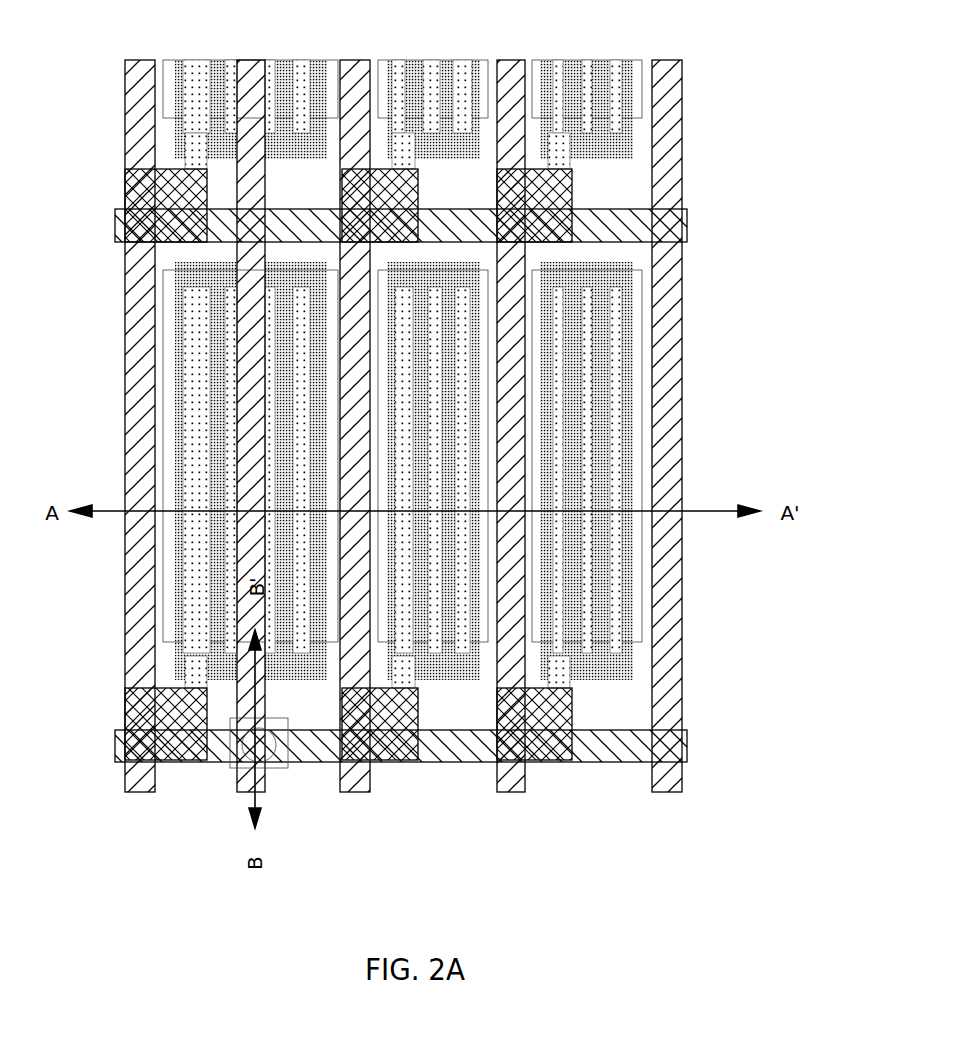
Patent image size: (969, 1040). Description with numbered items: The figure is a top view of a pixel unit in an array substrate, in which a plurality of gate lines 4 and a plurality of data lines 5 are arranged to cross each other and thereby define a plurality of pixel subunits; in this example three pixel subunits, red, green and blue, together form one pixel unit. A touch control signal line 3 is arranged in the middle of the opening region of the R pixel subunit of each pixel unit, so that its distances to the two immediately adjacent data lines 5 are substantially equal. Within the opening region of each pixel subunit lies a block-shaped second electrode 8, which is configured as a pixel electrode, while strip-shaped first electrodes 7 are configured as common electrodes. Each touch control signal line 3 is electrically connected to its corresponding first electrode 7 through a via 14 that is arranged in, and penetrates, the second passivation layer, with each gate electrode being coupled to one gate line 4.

The touch control signal line 3 is at (253, 485).
The gate line 4 is at (620, 742).
The data line 5 is at (355, 610).
The first electrode 7 is at (547, 422).
The second electrode 8 is at (557, 468).
The via 14 is at (248, 745).